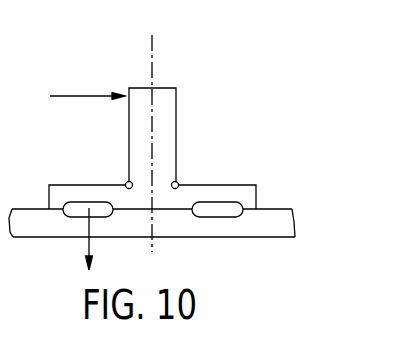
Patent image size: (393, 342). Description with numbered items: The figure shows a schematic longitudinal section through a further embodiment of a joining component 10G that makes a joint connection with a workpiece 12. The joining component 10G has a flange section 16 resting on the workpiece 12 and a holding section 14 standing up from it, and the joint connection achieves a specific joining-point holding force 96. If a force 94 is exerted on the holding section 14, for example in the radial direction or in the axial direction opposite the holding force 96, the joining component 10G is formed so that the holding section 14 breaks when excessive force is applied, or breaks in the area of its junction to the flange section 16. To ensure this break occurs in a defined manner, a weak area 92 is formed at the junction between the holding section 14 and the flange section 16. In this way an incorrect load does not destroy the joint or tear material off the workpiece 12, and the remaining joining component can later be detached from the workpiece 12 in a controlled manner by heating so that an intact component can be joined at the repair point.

The joining component 10G is at (217, 70).
The workpiece 12 is at (283, 222).
The holding section 14 is at (165, 122).
The flange section 16 is at (242, 195).
The weak area 92 is at (127, 183).
The force 94 is at (80, 94).
The joining-point holding force 96 is at (92, 247).